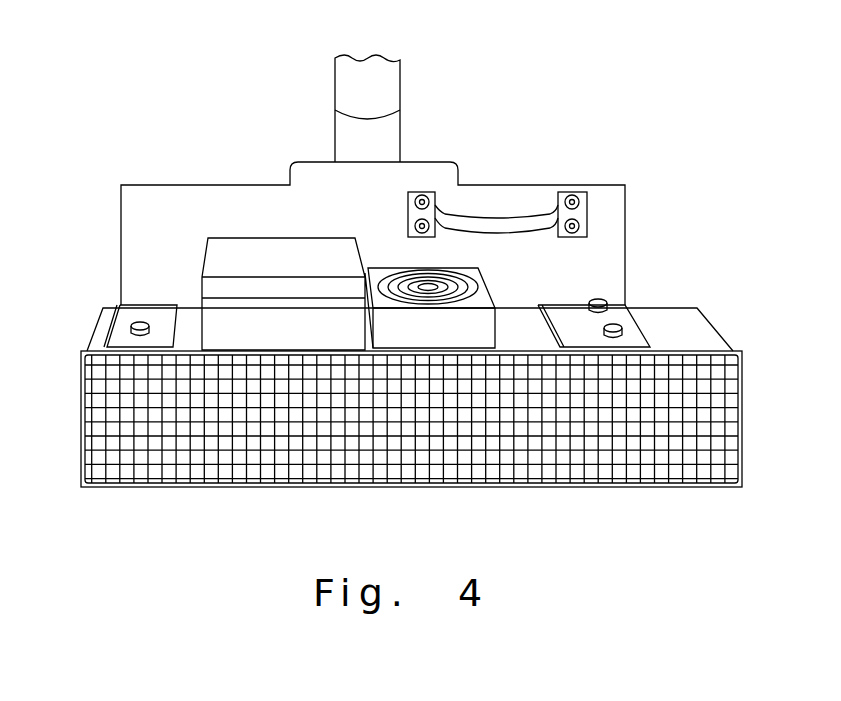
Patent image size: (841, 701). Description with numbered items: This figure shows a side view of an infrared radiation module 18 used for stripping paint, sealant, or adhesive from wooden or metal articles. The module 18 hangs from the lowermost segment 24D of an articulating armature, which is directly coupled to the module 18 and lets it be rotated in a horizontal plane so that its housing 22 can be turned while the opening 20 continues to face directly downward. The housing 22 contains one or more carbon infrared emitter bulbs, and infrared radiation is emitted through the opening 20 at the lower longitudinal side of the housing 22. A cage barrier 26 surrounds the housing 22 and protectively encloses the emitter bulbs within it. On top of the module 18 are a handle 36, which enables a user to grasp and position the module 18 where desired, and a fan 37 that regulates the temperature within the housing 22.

The module 18 is at (213, 152).
The lower segment 24D is at (392, 95).
The handle 36 is at (492, 222).
The fan 37 is at (485, 296).
The opening 20 is at (110, 487).
The housing 22 is at (281, 467).
The cage barrier 26 is at (408, 487).